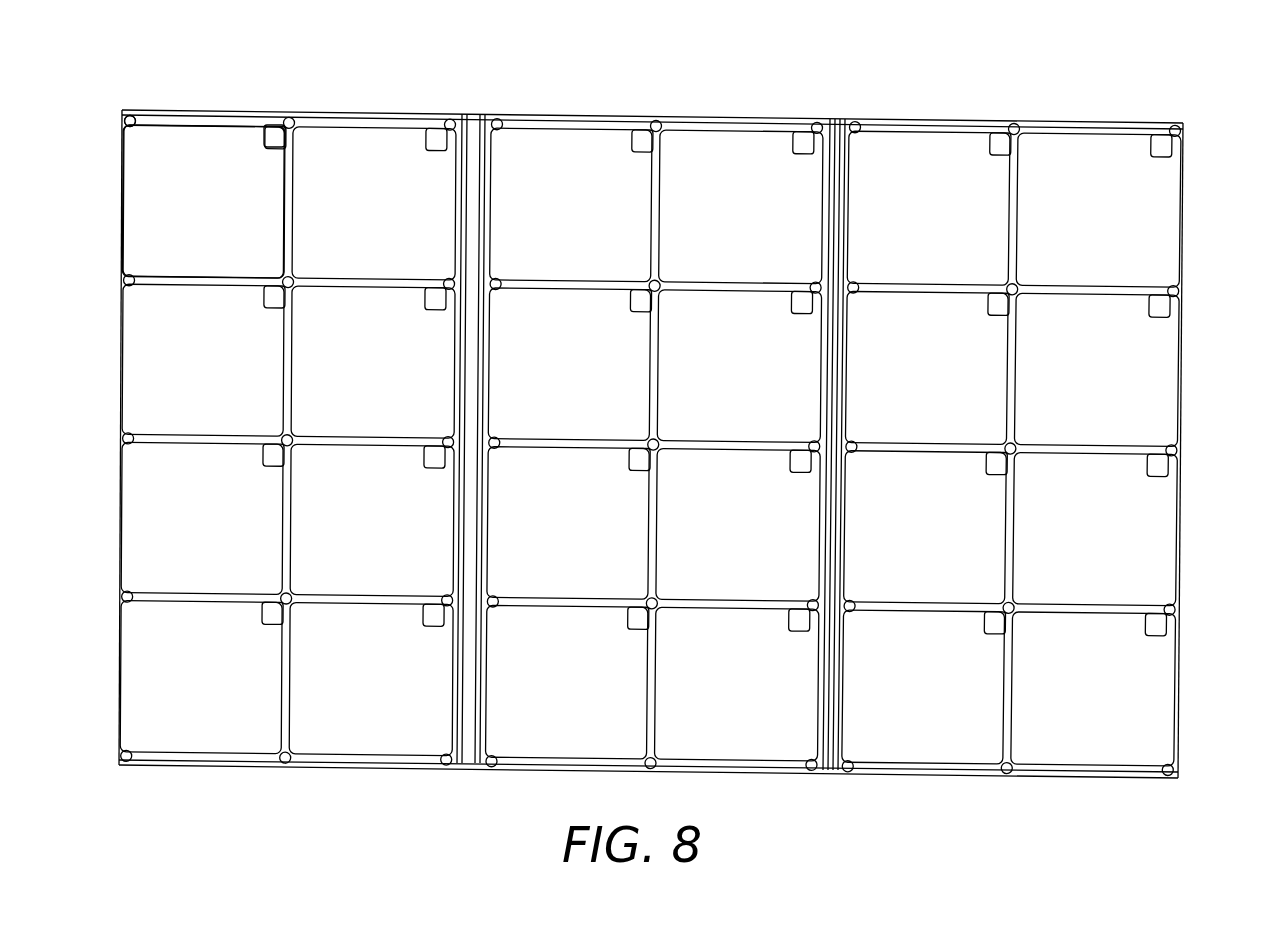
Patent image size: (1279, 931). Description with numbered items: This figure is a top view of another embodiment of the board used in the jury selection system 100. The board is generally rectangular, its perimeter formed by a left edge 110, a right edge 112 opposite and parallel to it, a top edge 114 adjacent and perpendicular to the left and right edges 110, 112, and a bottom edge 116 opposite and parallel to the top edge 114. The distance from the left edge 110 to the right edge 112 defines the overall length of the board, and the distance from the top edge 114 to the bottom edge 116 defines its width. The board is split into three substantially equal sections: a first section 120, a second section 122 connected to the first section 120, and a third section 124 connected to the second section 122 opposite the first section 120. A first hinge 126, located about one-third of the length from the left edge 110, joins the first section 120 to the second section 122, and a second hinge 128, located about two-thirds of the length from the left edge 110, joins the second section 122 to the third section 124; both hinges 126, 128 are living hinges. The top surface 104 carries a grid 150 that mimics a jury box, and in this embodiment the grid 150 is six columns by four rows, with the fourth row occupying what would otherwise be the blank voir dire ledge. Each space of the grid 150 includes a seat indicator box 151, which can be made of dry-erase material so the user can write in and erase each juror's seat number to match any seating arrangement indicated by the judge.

The jury selection system 100 is at (646, 410).
The first surface 104 is at (141, 191).
The left edge 110 is at (121, 355).
The right edge 112 is at (1182, 330).
The top edge 114 is at (512, 113).
The bottom edge 116 is at (370, 773).
The first section 120 is at (305, 145).
The second section 122 is at (622, 140).
The third section 124 is at (932, 145).
The first hinge 126 is at (473, 125).
The second hinge 128 is at (836, 120).
The grid 150 is at (160, 115).
The seat indicator box 151 is at (277, 128).